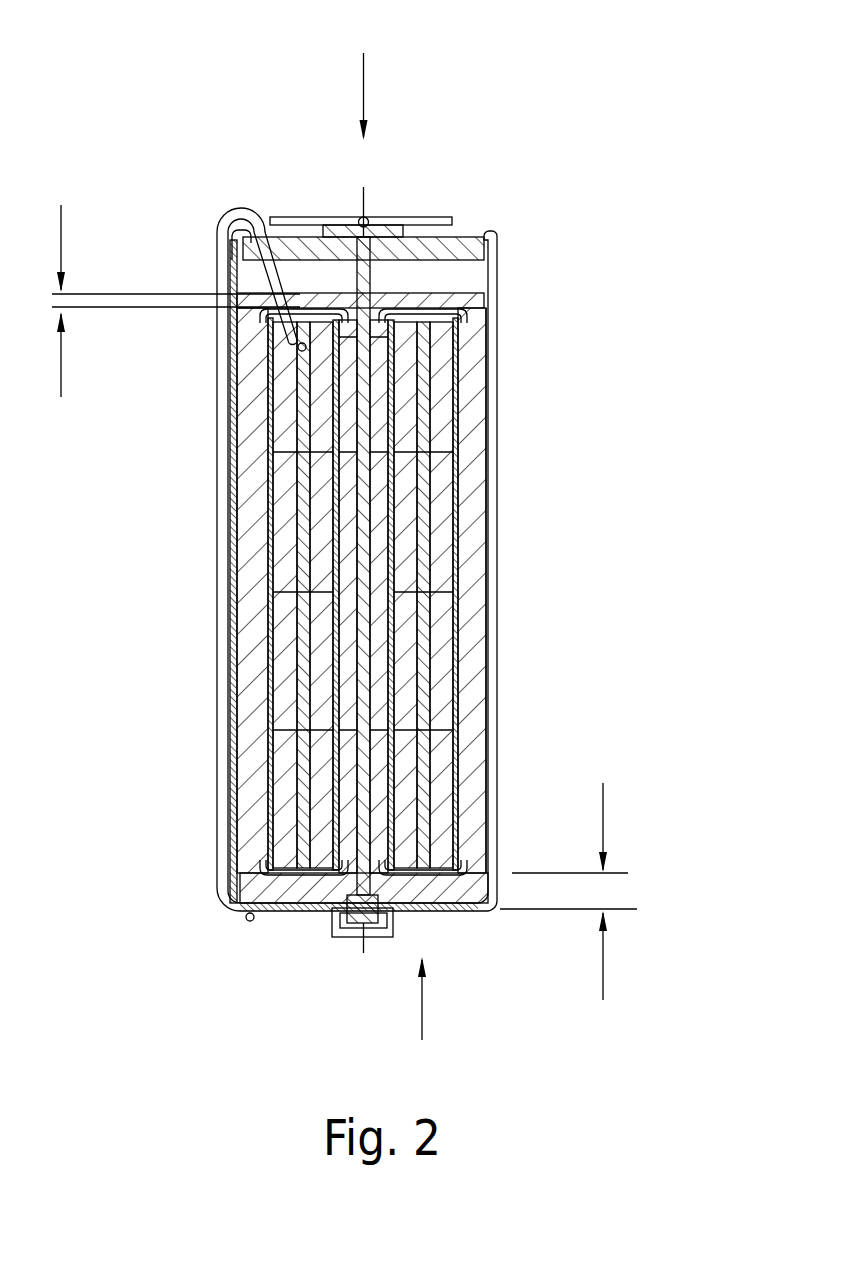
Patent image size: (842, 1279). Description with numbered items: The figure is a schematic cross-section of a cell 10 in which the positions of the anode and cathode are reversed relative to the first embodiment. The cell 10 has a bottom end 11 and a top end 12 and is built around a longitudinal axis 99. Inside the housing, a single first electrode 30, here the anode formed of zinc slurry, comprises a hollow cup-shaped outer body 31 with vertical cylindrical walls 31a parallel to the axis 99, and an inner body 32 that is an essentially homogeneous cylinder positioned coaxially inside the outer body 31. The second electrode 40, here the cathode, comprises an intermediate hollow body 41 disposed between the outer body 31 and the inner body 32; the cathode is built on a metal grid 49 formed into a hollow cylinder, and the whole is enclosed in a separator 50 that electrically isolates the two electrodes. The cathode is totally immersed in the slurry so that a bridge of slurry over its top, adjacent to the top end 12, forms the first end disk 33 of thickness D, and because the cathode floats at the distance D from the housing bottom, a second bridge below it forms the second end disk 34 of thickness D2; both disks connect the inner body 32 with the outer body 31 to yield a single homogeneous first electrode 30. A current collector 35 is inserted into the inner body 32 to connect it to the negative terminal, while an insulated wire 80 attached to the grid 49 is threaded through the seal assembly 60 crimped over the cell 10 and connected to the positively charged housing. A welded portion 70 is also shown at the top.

The cell 10 is at (470, 146).
The bottom end 11 is at (422, 1005).
The top end 12 is at (365, 81).
The first electrode 30 is at (472, 768).
The outer body 31 is at (493, 447).
The walls 31a is at (487, 635).
The inner body 32 is at (350, 685).
The first end disk 33 is at (260, 893).
The second end disk 34 is at (450, 303).
The current collector 35 is at (353, 585).
The second electrode 40 is at (455, 500).
The intermediate body 41 is at (437, 555).
The metal grid 49 is at (420, 412).
The separator 50 is at (460, 313).
The seal assembly 60 is at (292, 200).
The welded portion 70 is at (237, 250).
The insulated wire 80 is at (217, 417).
The longitudinal axis 99 is at (360, 207).
The thickness of second end disk D2 is at (170, 315).
The thickness of first end disk D is at (568, 891).